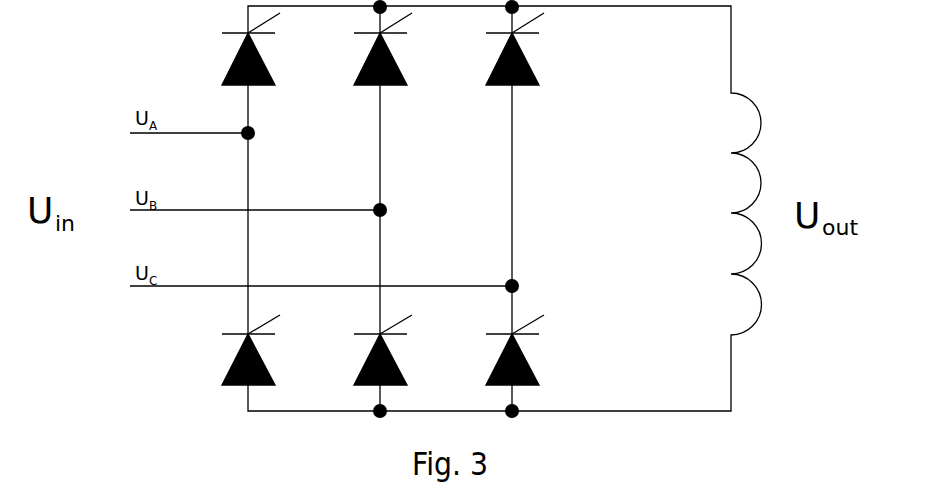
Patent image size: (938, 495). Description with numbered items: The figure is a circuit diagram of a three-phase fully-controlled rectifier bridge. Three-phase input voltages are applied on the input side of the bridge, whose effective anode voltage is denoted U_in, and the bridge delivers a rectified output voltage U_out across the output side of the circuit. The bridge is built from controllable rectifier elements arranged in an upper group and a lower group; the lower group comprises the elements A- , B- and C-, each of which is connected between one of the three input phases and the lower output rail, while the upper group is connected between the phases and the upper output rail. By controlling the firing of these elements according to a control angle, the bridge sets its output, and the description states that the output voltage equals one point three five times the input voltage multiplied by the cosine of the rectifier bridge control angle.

The thyristor A- is at (260, 350).
The thyristor B- is at (393, 350).
The thyristor C- is at (525, 350).